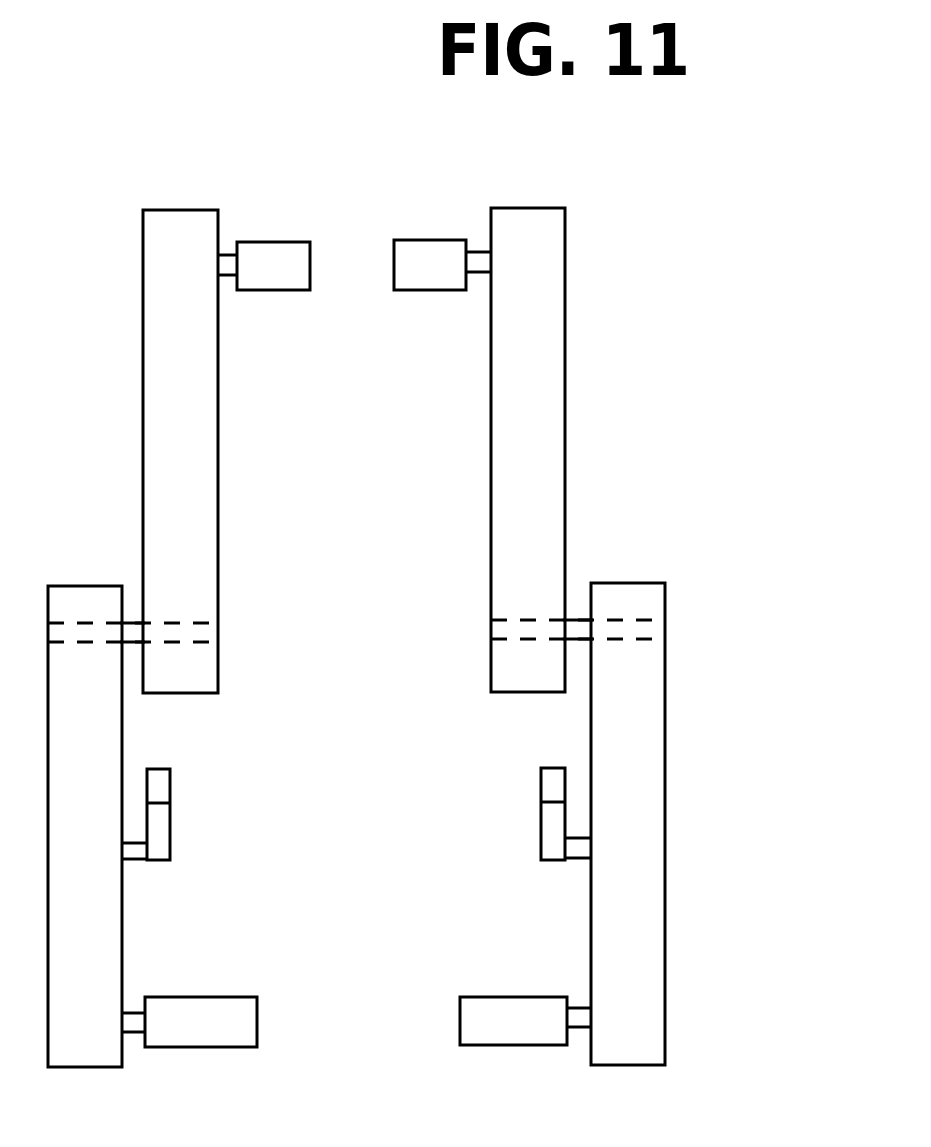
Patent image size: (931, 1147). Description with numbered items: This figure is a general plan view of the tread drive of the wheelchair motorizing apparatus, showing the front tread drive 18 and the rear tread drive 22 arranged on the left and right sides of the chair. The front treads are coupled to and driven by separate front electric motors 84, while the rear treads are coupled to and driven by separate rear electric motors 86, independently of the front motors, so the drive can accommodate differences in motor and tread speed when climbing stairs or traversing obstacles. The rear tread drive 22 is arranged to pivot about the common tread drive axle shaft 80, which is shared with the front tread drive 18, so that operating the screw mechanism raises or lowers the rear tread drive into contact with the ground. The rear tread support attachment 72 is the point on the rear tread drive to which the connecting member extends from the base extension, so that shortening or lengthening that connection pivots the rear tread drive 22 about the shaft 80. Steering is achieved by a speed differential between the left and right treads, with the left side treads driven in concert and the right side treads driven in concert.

The front tread drive 18 is at (540, 320).
The rear tread drive 22 is at (644, 917).
The common tread drive axle shaft 80 is at (650, 627).
The front electric motor 84 is at (440, 265).
The rear tread support attachment 72 is at (553, 815).
The rear electric motor 86 is at (503, 1014).